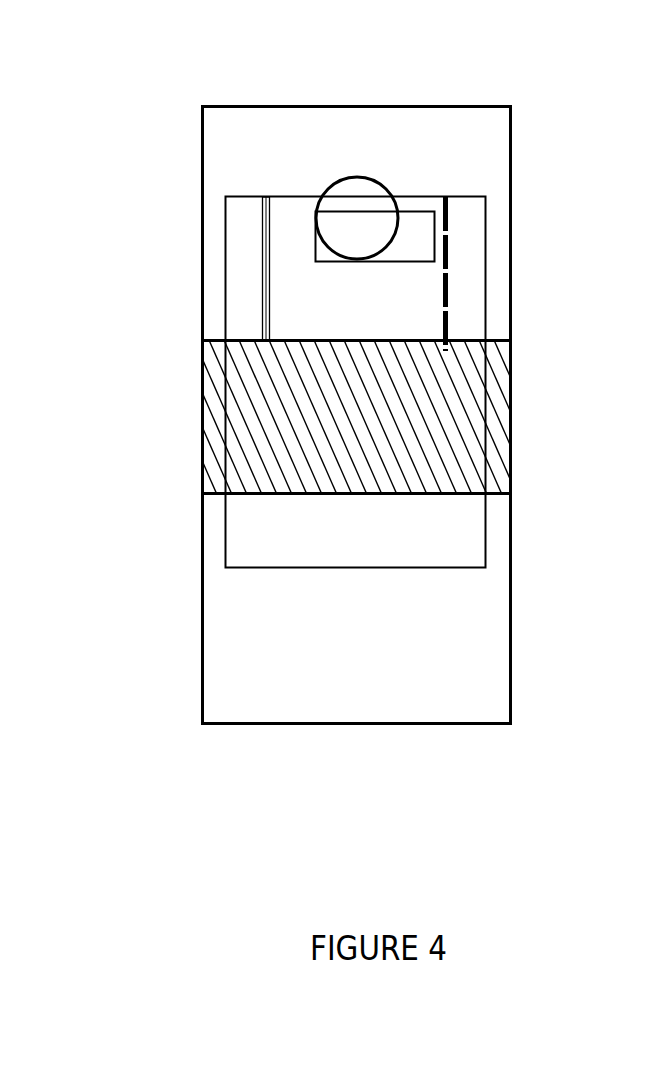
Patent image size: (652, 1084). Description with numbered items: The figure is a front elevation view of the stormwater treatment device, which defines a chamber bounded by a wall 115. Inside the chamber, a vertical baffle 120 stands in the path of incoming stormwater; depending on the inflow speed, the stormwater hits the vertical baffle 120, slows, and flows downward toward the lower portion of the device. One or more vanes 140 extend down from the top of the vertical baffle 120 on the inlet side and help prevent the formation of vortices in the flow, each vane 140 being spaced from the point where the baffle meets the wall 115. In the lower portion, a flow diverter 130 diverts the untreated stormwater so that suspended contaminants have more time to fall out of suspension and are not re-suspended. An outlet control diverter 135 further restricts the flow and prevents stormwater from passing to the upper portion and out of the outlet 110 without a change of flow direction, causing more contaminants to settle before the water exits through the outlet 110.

The outlet 110 is at (322, 192).
The wall 115 is at (512, 174).
The vertical baffle 120 is at (428, 195).
The flow diverter 130 is at (255, 495).
The outlet control diverter 135 is at (420, 212).
The vane 140 is at (262, 290).